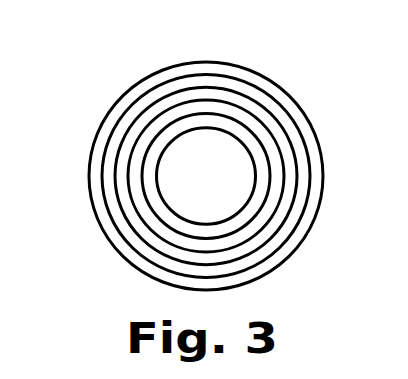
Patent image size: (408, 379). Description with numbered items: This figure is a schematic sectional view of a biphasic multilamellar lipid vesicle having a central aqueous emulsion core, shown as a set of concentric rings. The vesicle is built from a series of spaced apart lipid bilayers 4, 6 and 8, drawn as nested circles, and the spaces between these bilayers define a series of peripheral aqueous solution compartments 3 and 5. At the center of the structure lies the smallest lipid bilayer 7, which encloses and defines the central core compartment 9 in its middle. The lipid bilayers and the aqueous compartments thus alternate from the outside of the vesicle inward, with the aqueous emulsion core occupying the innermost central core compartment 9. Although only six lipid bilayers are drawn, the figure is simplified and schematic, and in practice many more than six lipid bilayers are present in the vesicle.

The peripheral aqueous solution compartment 3 is at (272, 83).
The lipid bilayer 4 is at (135, 85).
The peripheral aqueous solution compartment 5 is at (294, 127).
The lipid bilayer 6 is at (122, 106).
The smallest lipid bilayer 7 is at (232, 215).
The lipid bilayer 8 is at (121, 156).
The central core compartment 9 is at (237, 174).